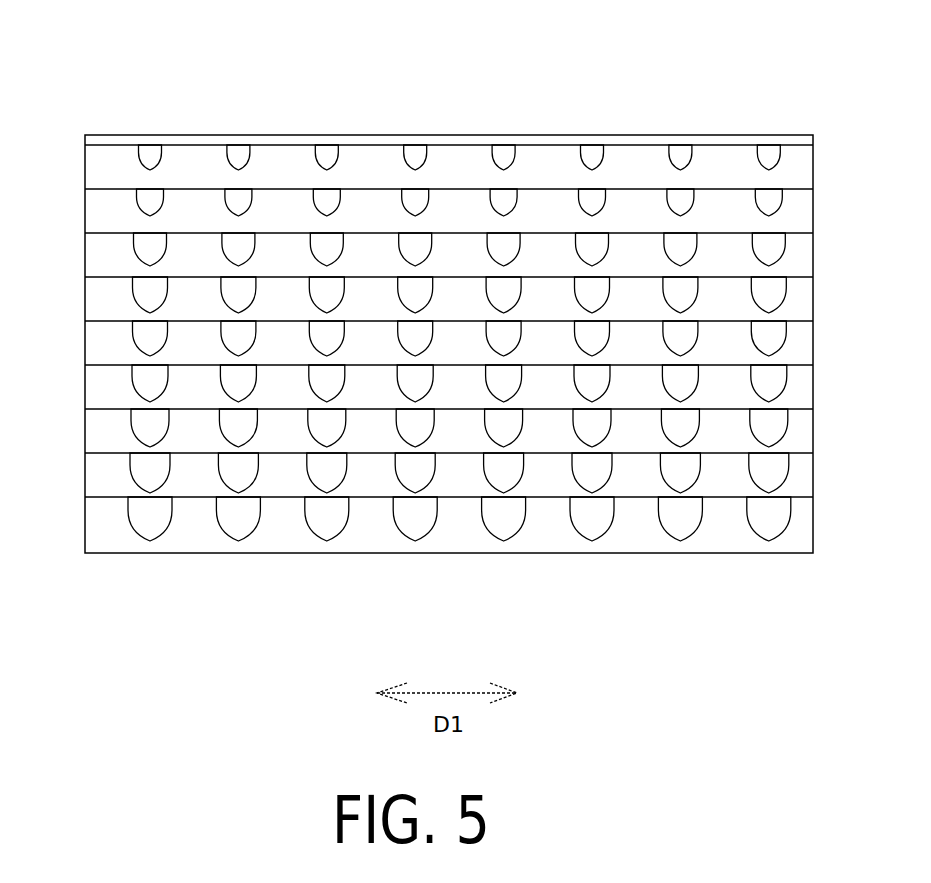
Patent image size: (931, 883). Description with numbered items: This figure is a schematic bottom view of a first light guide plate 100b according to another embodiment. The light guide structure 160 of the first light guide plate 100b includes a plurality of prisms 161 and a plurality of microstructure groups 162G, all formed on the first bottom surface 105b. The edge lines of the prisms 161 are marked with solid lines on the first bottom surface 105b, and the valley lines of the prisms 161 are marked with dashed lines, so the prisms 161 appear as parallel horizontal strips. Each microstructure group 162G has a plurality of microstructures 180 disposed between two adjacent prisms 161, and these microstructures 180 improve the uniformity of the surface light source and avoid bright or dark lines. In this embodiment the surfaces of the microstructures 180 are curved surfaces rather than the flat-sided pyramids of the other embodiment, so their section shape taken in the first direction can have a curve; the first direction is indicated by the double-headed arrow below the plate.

The first light guide plate 100b is at (105, 33).
The first bottom surface 105b is at (828, 146).
The light guide structure 160 is at (419, 419).
The prisms 161 is at (92, 388).
The microstructure groups 162G is at (149, 556).
The microstructures 180 is at (158, 157).